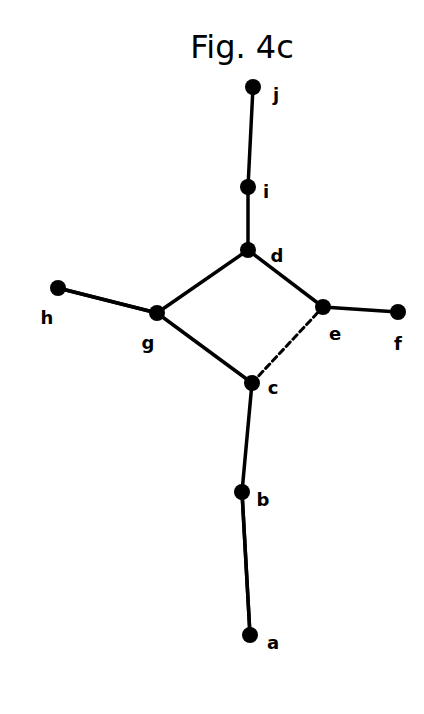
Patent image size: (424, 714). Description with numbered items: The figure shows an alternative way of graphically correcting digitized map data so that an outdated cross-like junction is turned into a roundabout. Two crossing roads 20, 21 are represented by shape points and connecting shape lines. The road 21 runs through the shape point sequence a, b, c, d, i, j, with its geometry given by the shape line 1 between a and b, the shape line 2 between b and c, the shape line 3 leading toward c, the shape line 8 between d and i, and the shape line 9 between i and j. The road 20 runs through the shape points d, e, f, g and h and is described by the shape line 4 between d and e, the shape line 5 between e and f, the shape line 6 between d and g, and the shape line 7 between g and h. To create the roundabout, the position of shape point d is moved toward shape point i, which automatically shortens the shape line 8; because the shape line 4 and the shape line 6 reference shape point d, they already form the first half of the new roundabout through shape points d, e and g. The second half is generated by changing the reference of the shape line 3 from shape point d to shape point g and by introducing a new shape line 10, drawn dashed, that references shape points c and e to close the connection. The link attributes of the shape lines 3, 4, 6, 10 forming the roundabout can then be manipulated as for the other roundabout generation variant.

The shape line 1 is at (237, 563).
The shape line 2 is at (238, 437).
The shape line 3 is at (204, 348).
The shape line 4 is at (285, 278).
The shape line 5 is at (360, 297).
The shape line 6 is at (202, 281).
The shape line 7 is at (107, 294).
The shape line 8 is at (235, 218).
The shape line 9 is at (240, 137).
The new shape line 10 is at (288, 345).
The road 20 is at (101, 320).
The road 21 is at (271, 592).